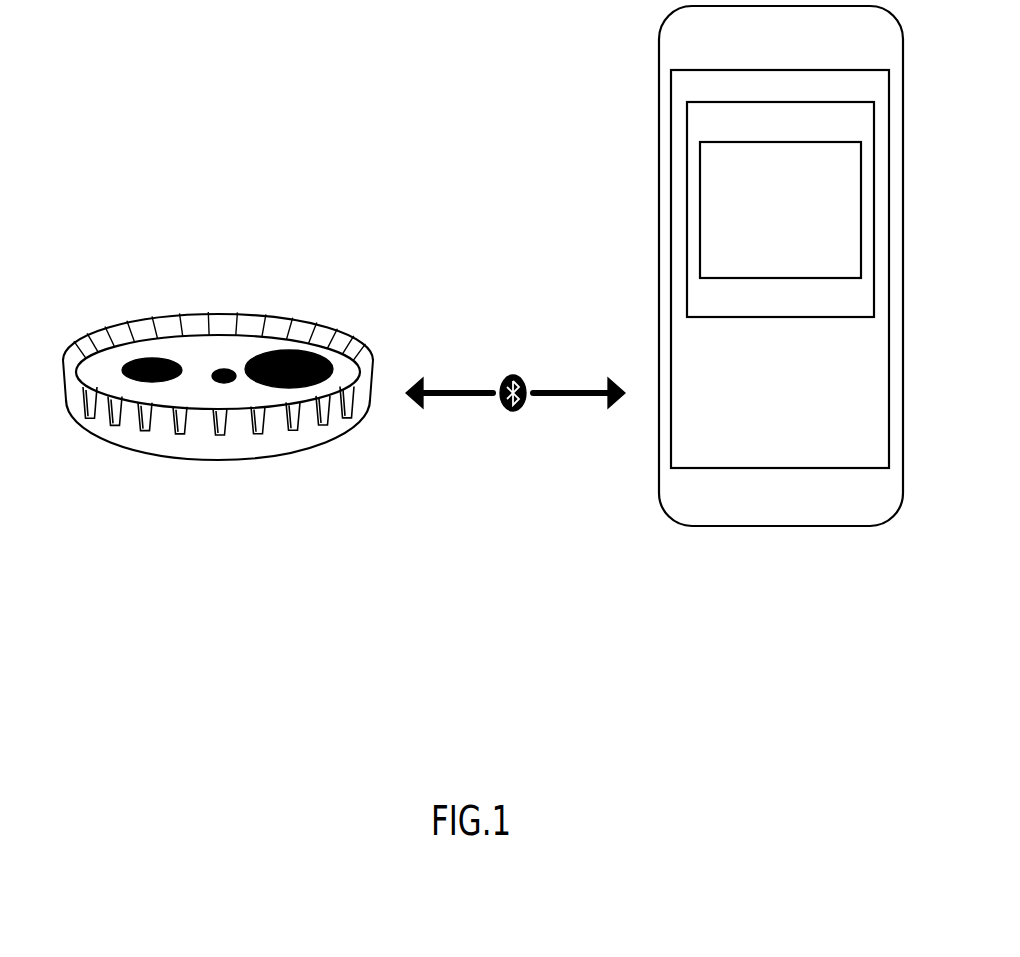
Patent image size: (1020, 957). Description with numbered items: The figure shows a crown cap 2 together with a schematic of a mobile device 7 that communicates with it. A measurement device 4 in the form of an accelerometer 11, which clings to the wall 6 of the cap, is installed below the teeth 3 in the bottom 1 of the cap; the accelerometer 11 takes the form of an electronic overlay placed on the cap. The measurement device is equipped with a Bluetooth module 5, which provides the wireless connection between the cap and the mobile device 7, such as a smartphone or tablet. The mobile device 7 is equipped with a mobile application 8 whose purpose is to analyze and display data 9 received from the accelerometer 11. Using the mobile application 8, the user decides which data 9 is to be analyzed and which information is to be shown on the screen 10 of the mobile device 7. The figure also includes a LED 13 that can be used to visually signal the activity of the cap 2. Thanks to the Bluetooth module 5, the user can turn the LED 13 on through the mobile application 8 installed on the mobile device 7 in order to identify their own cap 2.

The bottom 1 is at (173, 461).
The crown cap 2 is at (78, 405).
The teeth 3 is at (362, 348).
The measurement device 4 is at (337, 360).
The Bluetooth module 5 is at (227, 388).
The wall 6 is at (141, 328).
The mobile device 7 is at (760, 470).
The mobile application 8 is at (805, 446).
The data 9 is at (732, 188).
The screen 10 is at (703, 128).
The accelerometer 11 is at (310, 353).
The LED 13 is at (120, 368).